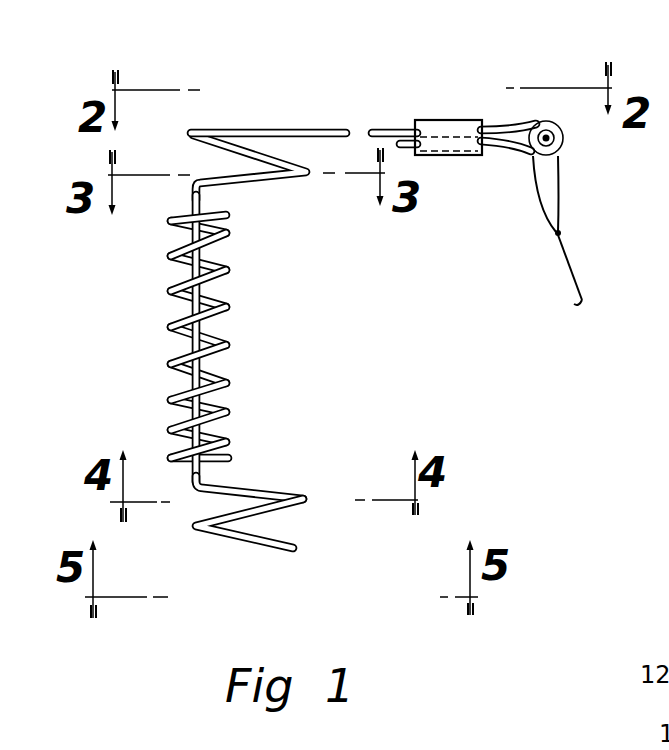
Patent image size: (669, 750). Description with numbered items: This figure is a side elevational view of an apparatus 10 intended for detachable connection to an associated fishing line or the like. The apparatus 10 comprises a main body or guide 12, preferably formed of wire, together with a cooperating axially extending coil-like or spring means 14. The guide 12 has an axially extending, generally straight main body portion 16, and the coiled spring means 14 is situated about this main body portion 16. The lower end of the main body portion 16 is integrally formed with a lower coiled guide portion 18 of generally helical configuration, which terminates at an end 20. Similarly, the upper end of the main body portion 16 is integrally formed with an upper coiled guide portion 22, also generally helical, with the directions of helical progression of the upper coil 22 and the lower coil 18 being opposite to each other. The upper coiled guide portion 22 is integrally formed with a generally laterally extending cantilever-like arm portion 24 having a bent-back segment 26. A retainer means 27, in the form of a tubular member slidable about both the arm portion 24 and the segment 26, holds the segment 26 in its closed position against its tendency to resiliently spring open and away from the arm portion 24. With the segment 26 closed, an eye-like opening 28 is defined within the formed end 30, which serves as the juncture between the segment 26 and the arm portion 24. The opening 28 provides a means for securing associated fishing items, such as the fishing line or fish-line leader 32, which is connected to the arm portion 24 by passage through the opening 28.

The apparatus 10 is at (328, 303).
The main body or guide 12 is at (278, 104).
The coil-like or spring means 14 is at (243, 338).
The main body portion 16 is at (218, 324).
The lower coiled guide portion 18 is at (306, 497).
The end 20 is at (296, 551).
The upper coiled guide portion 22 is at (307, 176).
The cantilever-like arm portion 24 is at (333, 122).
The bent-back segment 26 is at (453, 154).
The retainer means 27 is at (428, 118).
The eye-like opening 28 is at (555, 118).
The formed end 30 is at (564, 142).
The fishing line or fish-line leader 32 is at (563, 203).